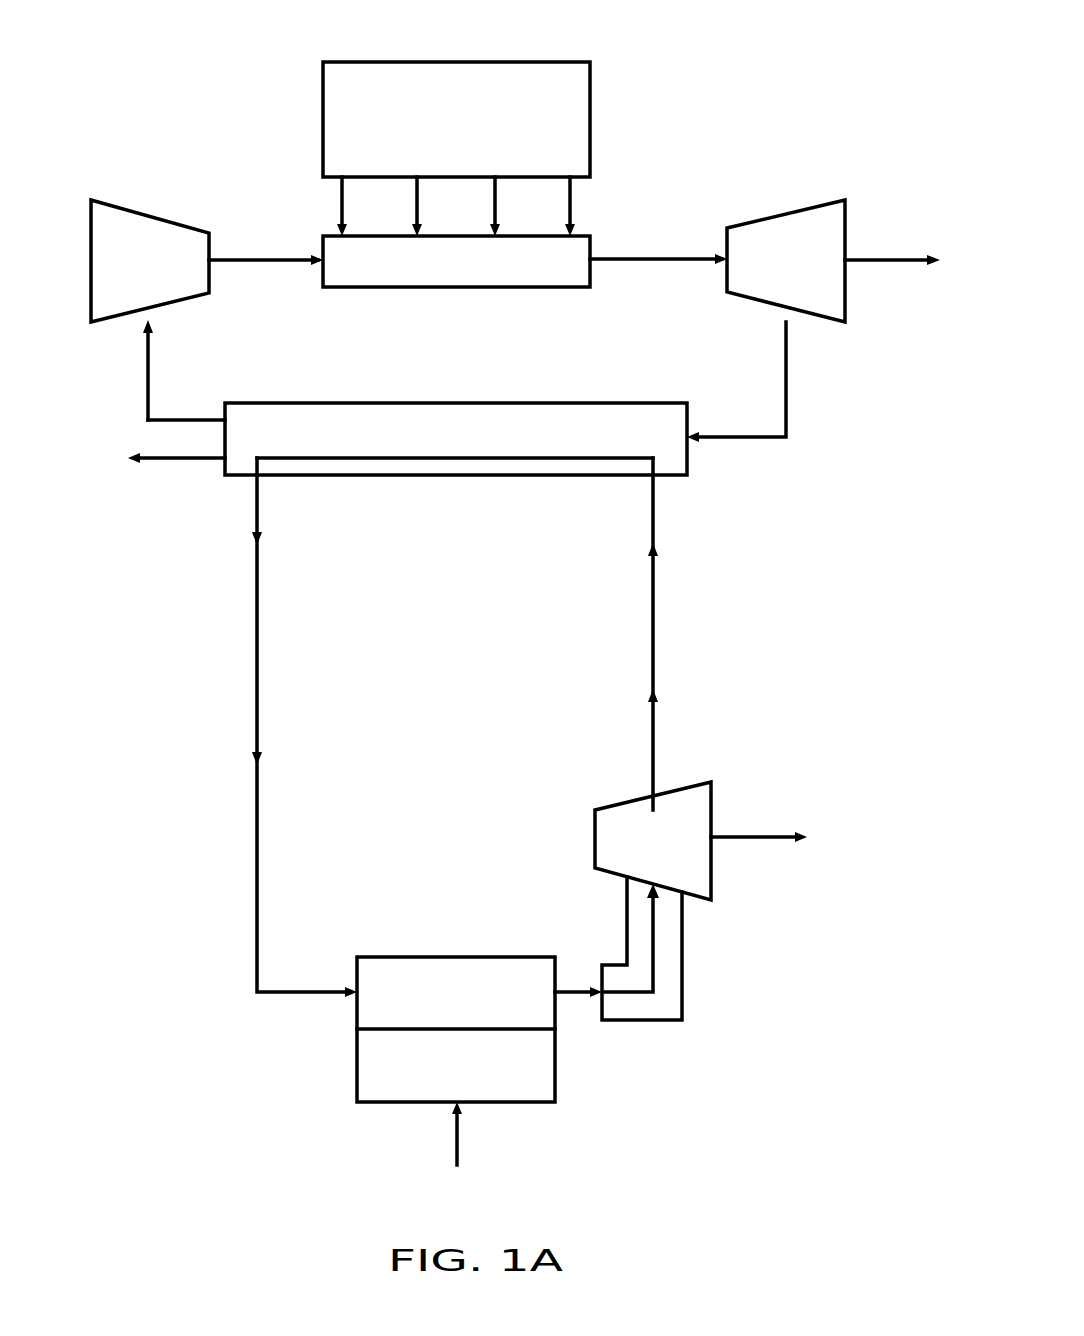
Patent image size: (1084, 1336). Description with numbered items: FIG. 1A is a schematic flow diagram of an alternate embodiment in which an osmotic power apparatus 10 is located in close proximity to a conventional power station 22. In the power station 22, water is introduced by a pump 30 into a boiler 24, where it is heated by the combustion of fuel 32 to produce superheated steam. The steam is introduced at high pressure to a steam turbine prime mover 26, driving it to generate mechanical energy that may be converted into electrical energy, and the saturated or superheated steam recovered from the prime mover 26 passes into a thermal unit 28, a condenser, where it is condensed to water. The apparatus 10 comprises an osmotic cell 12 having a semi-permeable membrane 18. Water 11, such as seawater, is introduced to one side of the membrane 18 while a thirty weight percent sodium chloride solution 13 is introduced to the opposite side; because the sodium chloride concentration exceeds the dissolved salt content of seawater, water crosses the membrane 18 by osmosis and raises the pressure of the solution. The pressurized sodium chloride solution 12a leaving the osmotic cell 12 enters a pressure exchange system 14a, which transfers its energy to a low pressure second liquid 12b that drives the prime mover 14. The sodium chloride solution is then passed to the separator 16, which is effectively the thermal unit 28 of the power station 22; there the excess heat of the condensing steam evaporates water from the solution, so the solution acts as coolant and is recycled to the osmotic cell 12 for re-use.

The apparatus 10 is at (126, 846).
The power station 22 is at (868, 52).
The pump 30 is at (198, 147).
The fuel 32 is at (322, 90).
The boiler 24 is at (390, 287).
The prime mover 26 is at (917, 148).
The thermal unit 28 is at (673, 345).
The separator 16 is at (574, 477).
The sodium chloride solution 13 is at (259, 848).
The osmotic cell 12 is at (416, 957).
The semi-permeable membrane 18 is at (357, 1029).
The water 11 is at (457, 1134).
The prime mover 14 is at (613, 806).
The pressure exchange system 14a is at (780, 975).
The low pressure second liquid 12b is at (653, 946).
The pressurized sodium chloride solution 12a is at (572, 995).